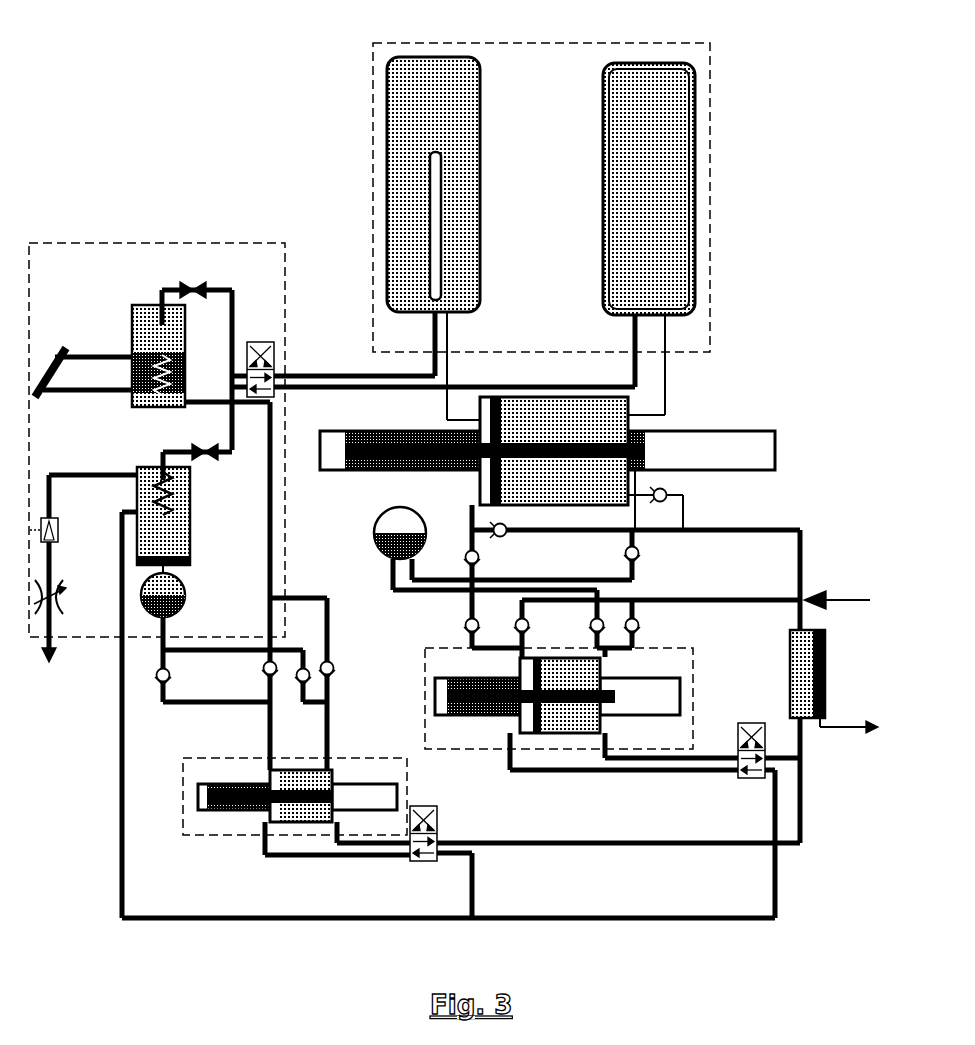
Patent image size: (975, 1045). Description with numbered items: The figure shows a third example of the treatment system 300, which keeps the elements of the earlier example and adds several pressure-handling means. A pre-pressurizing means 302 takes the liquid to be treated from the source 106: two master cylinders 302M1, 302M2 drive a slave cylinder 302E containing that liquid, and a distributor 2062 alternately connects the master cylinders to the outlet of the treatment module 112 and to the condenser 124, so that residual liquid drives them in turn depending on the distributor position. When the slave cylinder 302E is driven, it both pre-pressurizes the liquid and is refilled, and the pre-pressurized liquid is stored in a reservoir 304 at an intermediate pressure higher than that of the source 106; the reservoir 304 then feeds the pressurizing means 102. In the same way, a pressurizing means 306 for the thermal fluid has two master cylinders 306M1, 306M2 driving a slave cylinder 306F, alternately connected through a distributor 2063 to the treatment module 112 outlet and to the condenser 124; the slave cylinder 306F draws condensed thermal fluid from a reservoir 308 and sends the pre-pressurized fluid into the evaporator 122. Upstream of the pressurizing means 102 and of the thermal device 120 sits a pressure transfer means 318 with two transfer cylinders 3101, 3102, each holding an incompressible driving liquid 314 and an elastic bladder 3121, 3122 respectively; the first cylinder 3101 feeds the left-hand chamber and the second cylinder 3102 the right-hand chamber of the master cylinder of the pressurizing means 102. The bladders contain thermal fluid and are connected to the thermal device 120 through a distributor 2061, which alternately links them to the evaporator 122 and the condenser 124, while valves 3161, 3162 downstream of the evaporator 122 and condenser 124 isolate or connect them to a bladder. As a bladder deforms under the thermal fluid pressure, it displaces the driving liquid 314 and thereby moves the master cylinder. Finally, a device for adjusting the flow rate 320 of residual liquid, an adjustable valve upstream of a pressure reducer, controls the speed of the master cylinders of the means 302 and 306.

The system 300 is at (461, 462).
The pressure transfer means 318 is at (712, 216).
The pressure transfer cylinder 3101 is at (396, 159).
The pressure transfer cylinder 3102 is at (596, 164).
The incompressible driving liquid 314 is at (418, 110).
The elastic bladder 3121 is at (428, 174).
The elastic bladder 3122 is at (608, 166).
The pressurizing means 102 is at (706, 410).
The reservoir 304 is at (380, 532).
The source 106 is at (866, 604).
The treatment module 112 is at (822, 700).
The pre-pressurizing means 302 is at (570, 728).
The master cylinder 302M1 is at (456, 680).
The master cylinder 302M2 is at (680, 704).
The slave cylinder 302E is at (568, 740).
The distributor 2062 is at (780, 744).
The pressurizing means for thermal fluid 306 is at (330, 820).
The master cylinder 306M1 is at (240, 812).
The master cylinder 306M2 is at (398, 798).
The slave cylinder 306F is at (276, 774).
The distributor 2063 is at (412, 864).
The thermal device 120 is at (122, 244).
The evaporator 122 is at (150, 330).
The valve 3161 is at (196, 282).
The distributor 2061 is at (266, 330).
The valve 3162 is at (204, 462).
The condenser 124 is at (144, 470).
The device for adjusting the flow rate 320 is at (64, 552).
The reservoir 308 is at (185, 598).